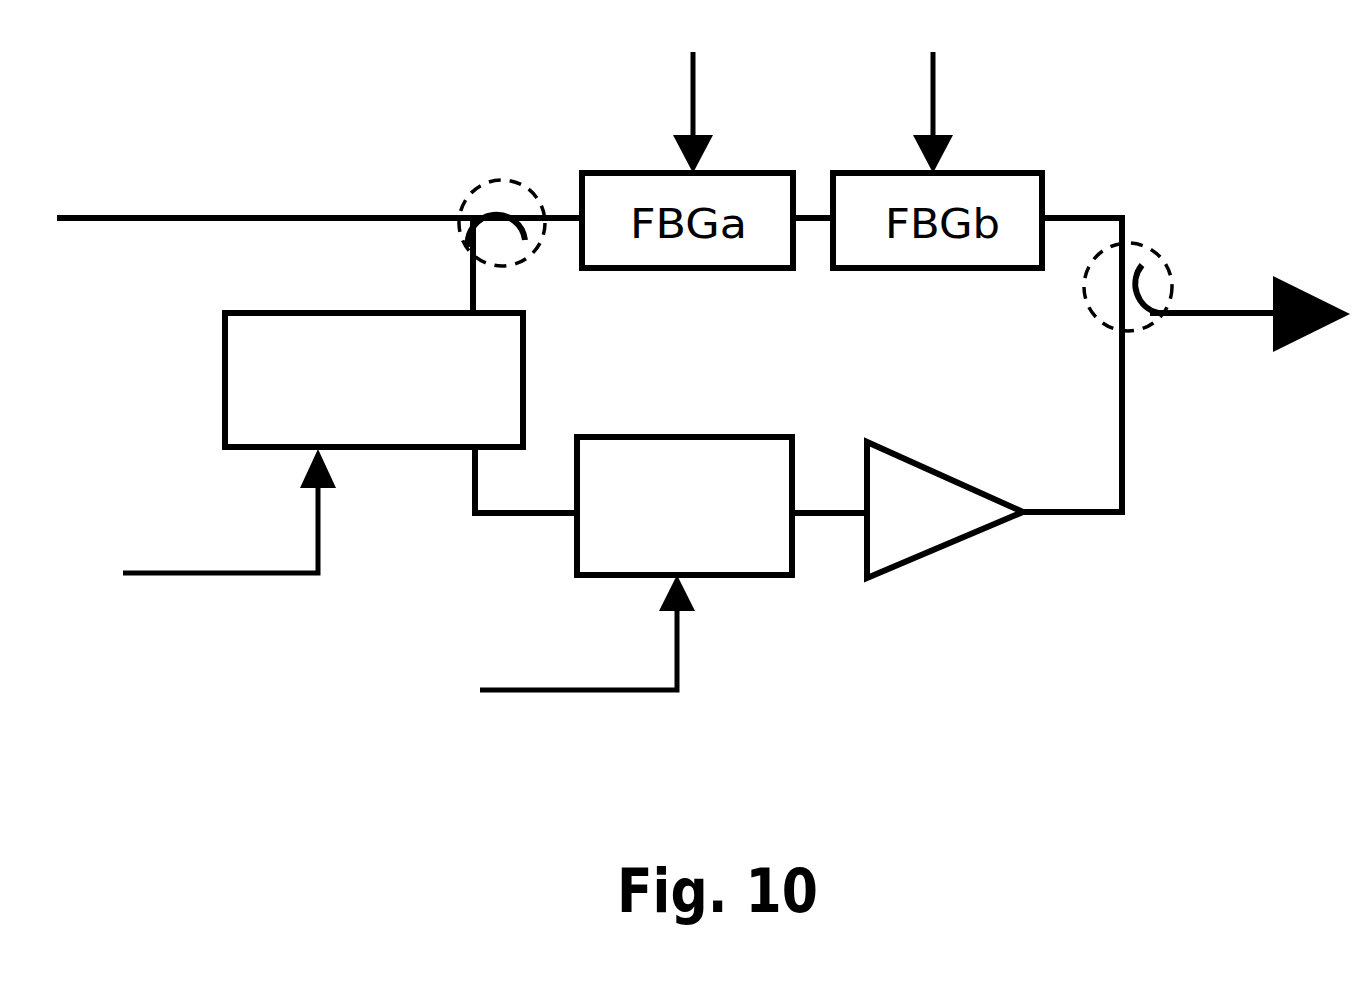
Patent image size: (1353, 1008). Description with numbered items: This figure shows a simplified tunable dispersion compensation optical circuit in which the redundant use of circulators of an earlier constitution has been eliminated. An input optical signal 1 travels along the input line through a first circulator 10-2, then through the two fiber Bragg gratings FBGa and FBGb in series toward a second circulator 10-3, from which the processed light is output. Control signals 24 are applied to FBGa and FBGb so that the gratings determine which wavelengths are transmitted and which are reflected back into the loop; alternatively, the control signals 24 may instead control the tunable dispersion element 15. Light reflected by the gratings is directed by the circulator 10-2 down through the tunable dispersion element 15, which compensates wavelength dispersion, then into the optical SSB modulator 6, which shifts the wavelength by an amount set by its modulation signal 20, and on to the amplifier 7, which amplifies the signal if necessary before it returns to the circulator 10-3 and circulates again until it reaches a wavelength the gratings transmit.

The input optical signal 1 is at (123, 215).
The optical circulator 10-2 is at (473, 173).
The optical circulator 10-3 is at (1157, 260).
The control signals 24 is at (536, 324).
The tunable dispersion element 15 is at (222, 372).
The optical SSB modulator 6 is at (670, 432).
The modulation signal 20 is at (553, 647).
The amplifier 7 is at (932, 557).